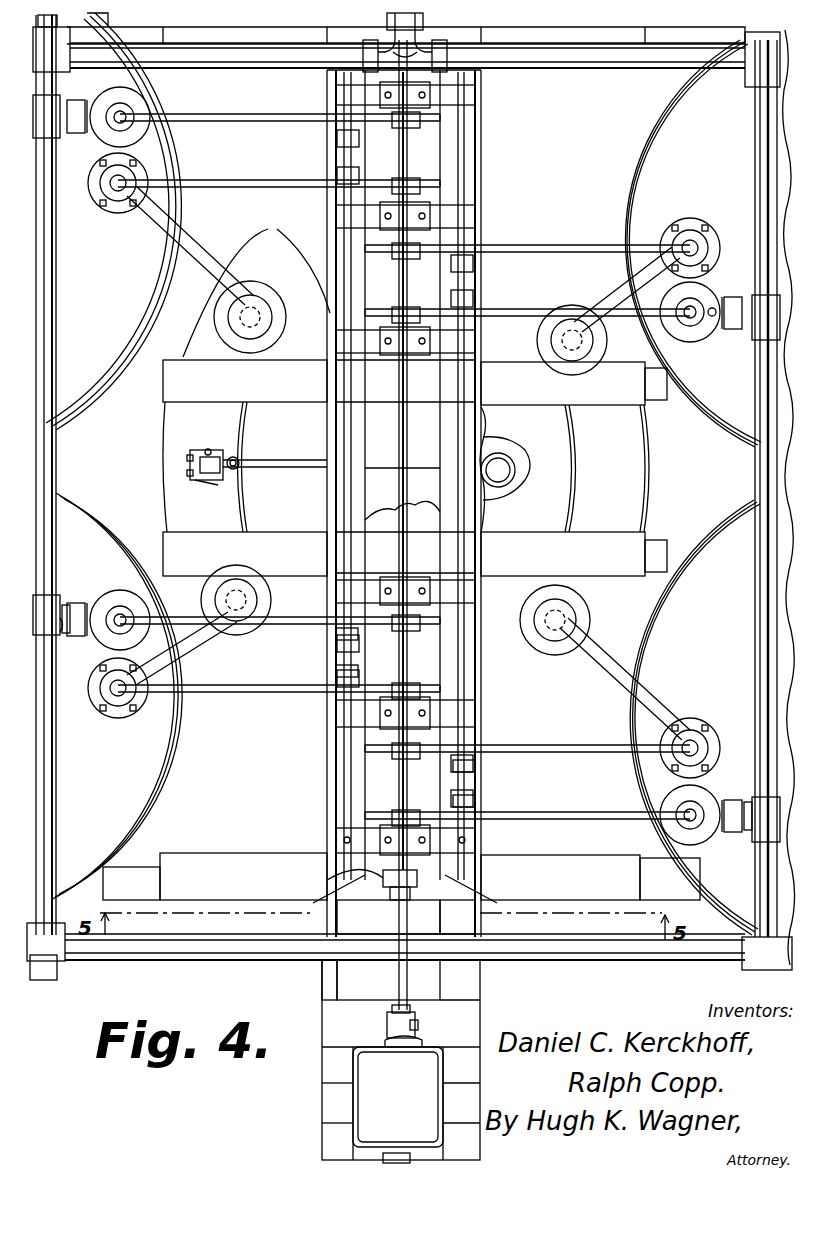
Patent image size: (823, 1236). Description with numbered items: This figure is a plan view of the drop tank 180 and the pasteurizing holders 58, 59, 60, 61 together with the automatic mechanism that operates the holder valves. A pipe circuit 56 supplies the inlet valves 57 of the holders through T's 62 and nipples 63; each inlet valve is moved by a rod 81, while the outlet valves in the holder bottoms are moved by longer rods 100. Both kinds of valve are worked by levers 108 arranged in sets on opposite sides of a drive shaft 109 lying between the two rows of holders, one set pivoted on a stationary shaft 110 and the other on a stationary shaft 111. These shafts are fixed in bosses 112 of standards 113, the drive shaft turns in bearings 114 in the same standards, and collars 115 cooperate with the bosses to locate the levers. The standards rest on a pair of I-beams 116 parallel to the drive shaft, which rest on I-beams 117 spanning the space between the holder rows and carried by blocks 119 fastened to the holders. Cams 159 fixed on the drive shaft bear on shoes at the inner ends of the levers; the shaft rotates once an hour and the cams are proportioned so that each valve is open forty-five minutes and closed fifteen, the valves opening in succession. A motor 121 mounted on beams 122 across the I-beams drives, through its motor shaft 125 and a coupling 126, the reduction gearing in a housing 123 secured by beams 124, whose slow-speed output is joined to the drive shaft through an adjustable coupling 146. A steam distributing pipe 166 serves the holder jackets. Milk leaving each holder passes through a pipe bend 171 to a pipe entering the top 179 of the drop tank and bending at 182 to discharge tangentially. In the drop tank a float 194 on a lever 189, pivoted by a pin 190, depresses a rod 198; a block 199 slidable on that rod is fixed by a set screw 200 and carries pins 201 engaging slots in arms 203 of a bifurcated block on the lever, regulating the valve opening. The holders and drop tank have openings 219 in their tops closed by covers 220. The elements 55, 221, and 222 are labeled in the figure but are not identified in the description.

The T pipe fitting 55 is at (420, 18).
The pipe circuit 56 is at (560, 955).
The inlet valves 57 is at (106, 138).
The pasteurizing holder 58 is at (117, 765).
The pasteurizing holder 59 is at (121, 292).
The pasteurizing holder 60 is at (726, 382).
The pasteurizing holder 61 is at (716, 875).
The T's 62 is at (58, 628).
The nipples 63 is at (80, 603).
The rod 81 is at (715, 333).
The rods 100 is at (118, 190).
The levers 108 is at (243, 187).
The drive shaft 109 is at (402, 780).
The stationary shaft 110 is at (340, 437).
The stationary shaft 111 is at (460, 555).
The bosses 112 is at (350, 838).
The standards 113 is at (472, 100).
The bearings 114 is at (420, 878).
The collars 115 is at (335, 672).
The I-beams 116 is at (486, 512).
The I-beams 117 is at (243, 876).
The blocks 119 is at (645, 888).
The motor 121 is at (398, 1097).
The beams 122 is at (335, 1068).
The housing 123 is at (408, 980).
The beams 124 is at (480, 910).
The motor shaft 125 is at (392, 1040).
The coupling 126 is at (418, 1025).
The adjustable coupling 146 is at (370, 895).
The cams 159 is at (425, 135).
The distributing pipe 166 is at (158, 343).
The pipe bend 171 is at (200, 250).
The top of drop tank 179 is at (598, 468).
The drop tank 180 is at (645, 462).
The bend 182 is at (275, 280).
The lever 189 is at (268, 468).
The pin 190 is at (228, 472).
The float 194 is at (508, 466).
The rod 198 is at (195, 465).
The block 199 is at (190, 455).
The set screw 200 is at (190, 470).
The pins 201 is at (208, 450).
The arms 203 is at (200, 482).
The openings 219 is at (231, 467).
The covers 220 is at (520, 458).
The top pipe left section 221 is at (215, 58).
The top pipe right section 222 is at (550, 58).